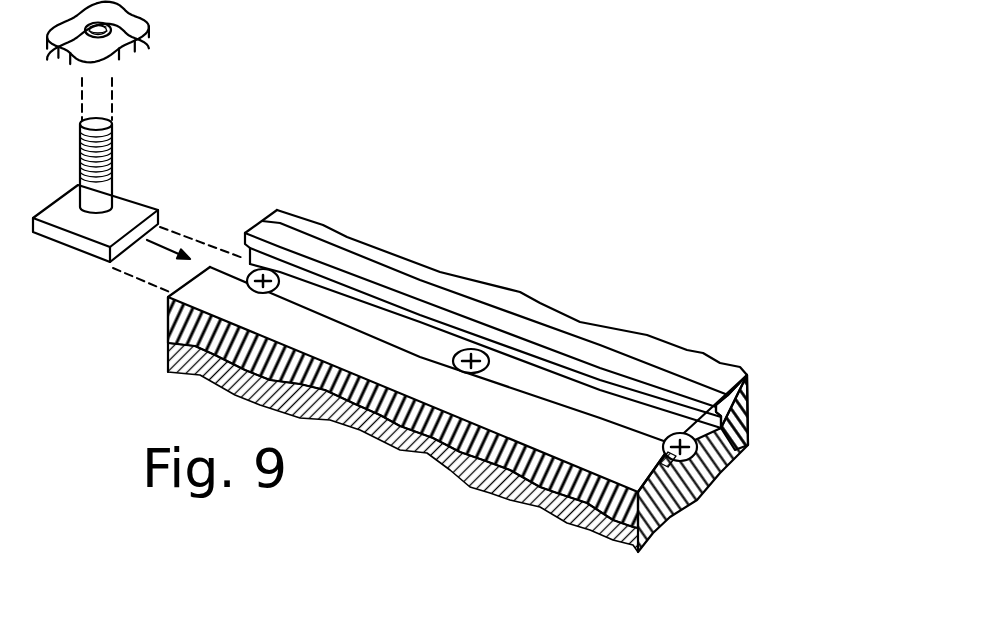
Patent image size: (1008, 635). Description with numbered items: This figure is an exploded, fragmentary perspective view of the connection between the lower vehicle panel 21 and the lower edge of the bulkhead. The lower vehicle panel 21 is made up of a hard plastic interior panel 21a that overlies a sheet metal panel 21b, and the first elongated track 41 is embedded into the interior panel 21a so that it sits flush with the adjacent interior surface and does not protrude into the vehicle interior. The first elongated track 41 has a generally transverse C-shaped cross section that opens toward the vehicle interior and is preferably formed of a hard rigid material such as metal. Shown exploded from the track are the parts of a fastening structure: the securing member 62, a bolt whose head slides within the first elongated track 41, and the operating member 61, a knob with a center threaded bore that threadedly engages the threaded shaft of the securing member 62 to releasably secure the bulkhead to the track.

The operating member 61 is at (135, 26).
The securing member 62 is at (132, 205).
The first elongated track 41 is at (392, 282).
The lower vehicle panel 21 is at (521, 409).
The interior panel 21a is at (776, 412).
The sheet metal panel 21b is at (730, 460).